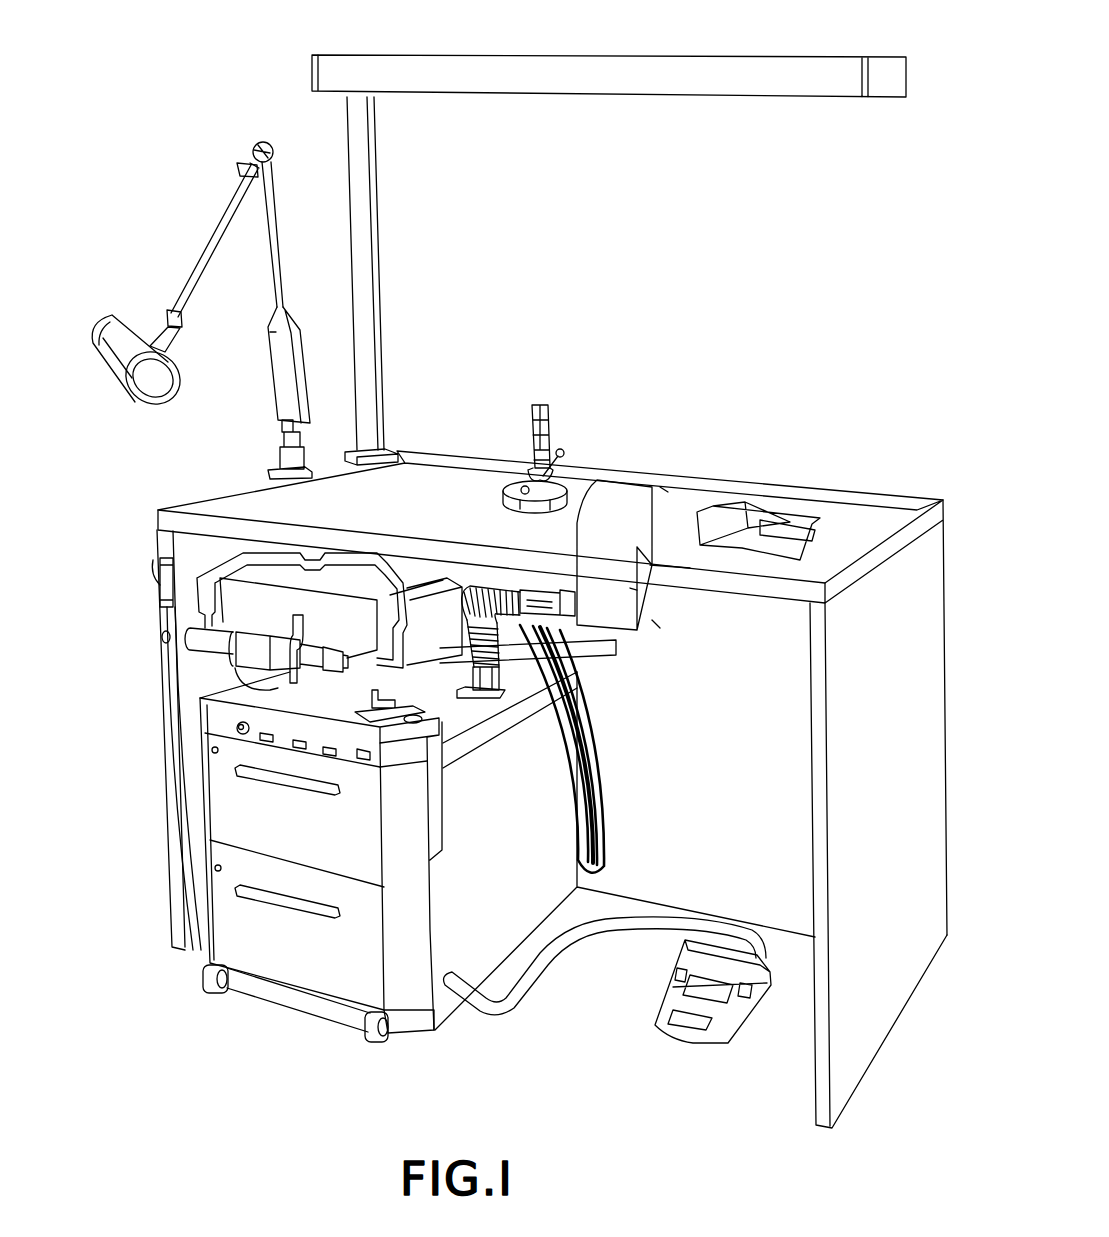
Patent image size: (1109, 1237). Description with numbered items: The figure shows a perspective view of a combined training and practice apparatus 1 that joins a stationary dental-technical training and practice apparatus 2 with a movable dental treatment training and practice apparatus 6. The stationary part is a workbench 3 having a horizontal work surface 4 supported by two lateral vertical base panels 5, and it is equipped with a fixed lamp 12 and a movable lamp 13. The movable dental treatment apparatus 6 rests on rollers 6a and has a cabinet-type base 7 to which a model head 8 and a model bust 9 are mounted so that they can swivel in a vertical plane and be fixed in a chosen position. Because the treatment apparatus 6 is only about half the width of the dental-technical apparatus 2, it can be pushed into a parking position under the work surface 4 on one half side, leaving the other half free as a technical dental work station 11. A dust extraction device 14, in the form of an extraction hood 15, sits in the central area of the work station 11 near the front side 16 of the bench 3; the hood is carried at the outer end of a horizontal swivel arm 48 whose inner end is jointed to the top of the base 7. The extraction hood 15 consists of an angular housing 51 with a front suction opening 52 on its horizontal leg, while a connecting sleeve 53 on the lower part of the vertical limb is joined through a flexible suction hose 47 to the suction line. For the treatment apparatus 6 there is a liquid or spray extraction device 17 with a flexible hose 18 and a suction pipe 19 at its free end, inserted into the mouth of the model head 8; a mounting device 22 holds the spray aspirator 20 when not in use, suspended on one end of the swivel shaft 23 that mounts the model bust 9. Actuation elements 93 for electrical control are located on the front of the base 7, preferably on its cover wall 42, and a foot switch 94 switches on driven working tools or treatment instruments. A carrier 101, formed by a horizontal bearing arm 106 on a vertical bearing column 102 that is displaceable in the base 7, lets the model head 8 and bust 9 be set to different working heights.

The combined training and practice apparatus 1 is at (344, 894).
The stationary dental-technical training and practice apparatus 2 is at (551, 451).
The workbench 3 is at (572, 458).
The horizontal work surface 4 is at (872, 520).
The lateral vertical base panels 5 is at (552, 780).
The movable dental treatment training and practice apparatus 6 is at (355, 1050).
The rollers 6a is at (220, 994).
The cabinet-type base 7 is at (362, 894).
The model head 8 is at (329, 579).
The model bust 9 is at (434, 565).
The technical dental work station 11 is at (680, 560).
The fixed lamp 12 is at (607, 70).
The movable lamp 13 is at (105, 316).
The dust extraction device 14 is at (668, 627).
The extraction hood 15 is at (611, 485).
The front side 16 is at (813, 655).
The liquid or spray extraction device 17 is at (168, 690).
The flexible hose 18 is at (179, 752).
The suction pipe 19 is at (150, 502).
The spray aspirator 20 is at (155, 572).
The mounting device 22 is at (158, 638).
The swivel shaft 23 is at (208, 637).
The cover wall 42 is at (473, 727).
The flexible suction hose 47 is at (479, 585).
The horizontal swivel arm 48 is at (610, 660).
The angular housing 51 is at (630, 590).
The front suction opening 52 is at (662, 488).
The connecting sleeve 53 is at (567, 596).
The actuation elements 93 is at (246, 740).
The foot switch 94 is at (670, 1013).
The carrier 101 is at (315, 783).
The vertical bearing column 102 is at (440, 827).
The horizontal bearing arm 106 is at (351, 732).